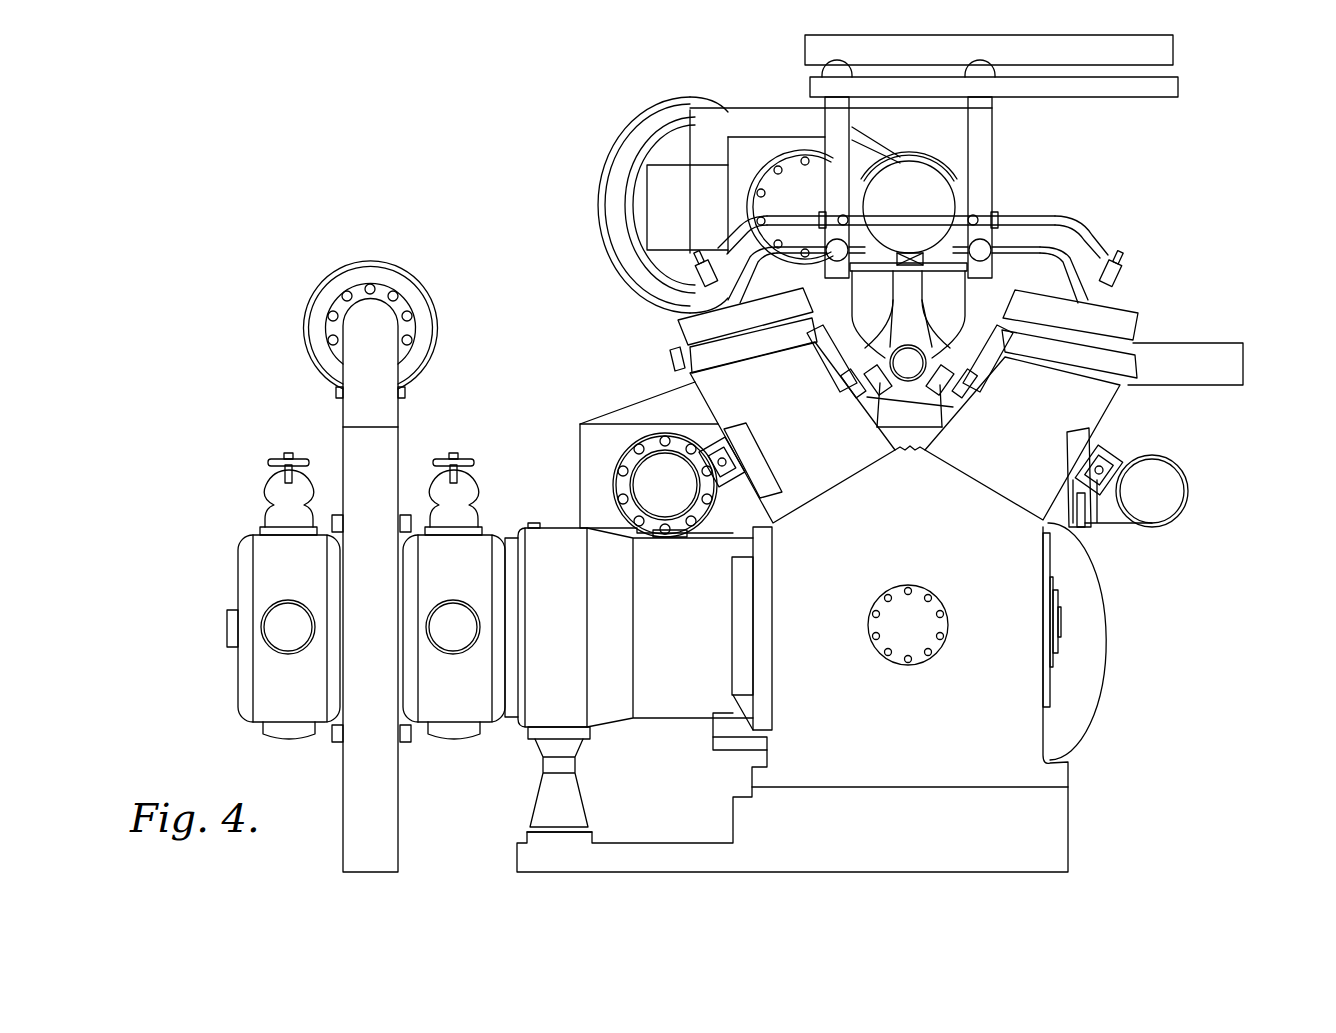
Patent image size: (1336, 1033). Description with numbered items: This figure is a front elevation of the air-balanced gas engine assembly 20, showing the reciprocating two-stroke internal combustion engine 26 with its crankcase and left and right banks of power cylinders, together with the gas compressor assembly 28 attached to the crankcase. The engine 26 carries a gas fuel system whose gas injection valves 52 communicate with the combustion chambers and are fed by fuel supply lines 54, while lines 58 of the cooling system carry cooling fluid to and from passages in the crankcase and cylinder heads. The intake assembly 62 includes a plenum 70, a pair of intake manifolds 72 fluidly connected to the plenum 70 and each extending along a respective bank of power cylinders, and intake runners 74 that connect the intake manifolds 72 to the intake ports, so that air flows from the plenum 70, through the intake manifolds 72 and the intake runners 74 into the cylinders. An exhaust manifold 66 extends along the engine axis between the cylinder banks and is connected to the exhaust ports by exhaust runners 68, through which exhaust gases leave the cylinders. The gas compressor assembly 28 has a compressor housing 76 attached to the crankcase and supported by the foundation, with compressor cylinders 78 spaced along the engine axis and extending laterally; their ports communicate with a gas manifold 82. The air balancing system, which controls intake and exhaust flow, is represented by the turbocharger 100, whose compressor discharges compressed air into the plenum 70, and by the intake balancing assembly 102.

The air-balanced gas engine assembly 20 is at (388, 146).
The reciprocating two-stroke internal combustion engine 26 is at (1150, 665).
The gas compressor assembly 28 is at (296, 597).
The gas injection valves 52 is at (1112, 273).
The fuel supply lines 54 is at (1147, 90).
The lines 58 is at (1163, 48).
The intake assembly 62 is at (622, 385).
The exhaust manifold 66 is at (935, 195).
The exhaust runners 68 is at (948, 303).
The plenum 70 is at (597, 437).
The intake manifolds 72 is at (647, 490).
The intake runners 74 is at (732, 497).
The compressor housing 76 is at (537, 715).
The compressor cylinders 78 is at (243, 587).
The gas manifold 82 is at (372, 272).
The turbocharger 100 is at (658, 204).
The intake balancing assembly 102 is at (1196, 424).